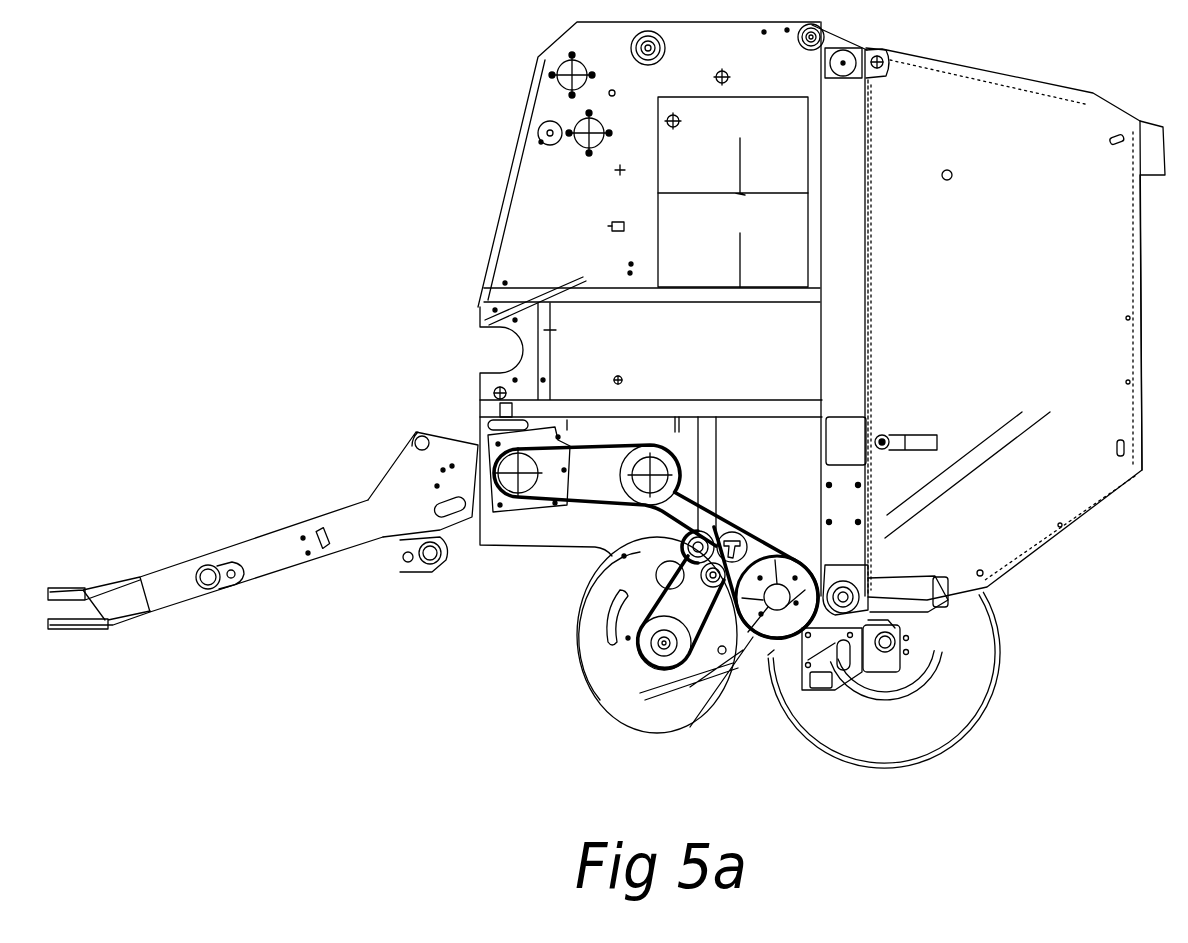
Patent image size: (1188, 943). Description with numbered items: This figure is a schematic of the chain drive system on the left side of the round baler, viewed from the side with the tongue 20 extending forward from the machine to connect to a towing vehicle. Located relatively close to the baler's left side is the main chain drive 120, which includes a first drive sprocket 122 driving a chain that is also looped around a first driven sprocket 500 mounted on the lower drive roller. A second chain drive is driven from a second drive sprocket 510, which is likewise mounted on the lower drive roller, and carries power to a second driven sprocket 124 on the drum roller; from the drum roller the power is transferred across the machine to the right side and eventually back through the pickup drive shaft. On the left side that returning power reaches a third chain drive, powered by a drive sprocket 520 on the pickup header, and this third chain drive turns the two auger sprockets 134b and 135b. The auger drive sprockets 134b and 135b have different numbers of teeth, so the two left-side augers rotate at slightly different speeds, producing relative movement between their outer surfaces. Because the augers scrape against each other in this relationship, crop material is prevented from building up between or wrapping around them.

The tongue 20 is at (285, 528).
The first drive sprocket 122 is at (525, 487).
The auger drive sprocket 134b is at (685, 552).
The auger drive sprocket 135b is at (703, 582).
The main chain drive 120 is at (583, 712).
The drive sprocket 520 is at (662, 660).
The second driven sprocket 124 is at (750, 640).
The first driven sprocket 500 is at (640, 466).
The second drive sprocket 510 is at (662, 466).